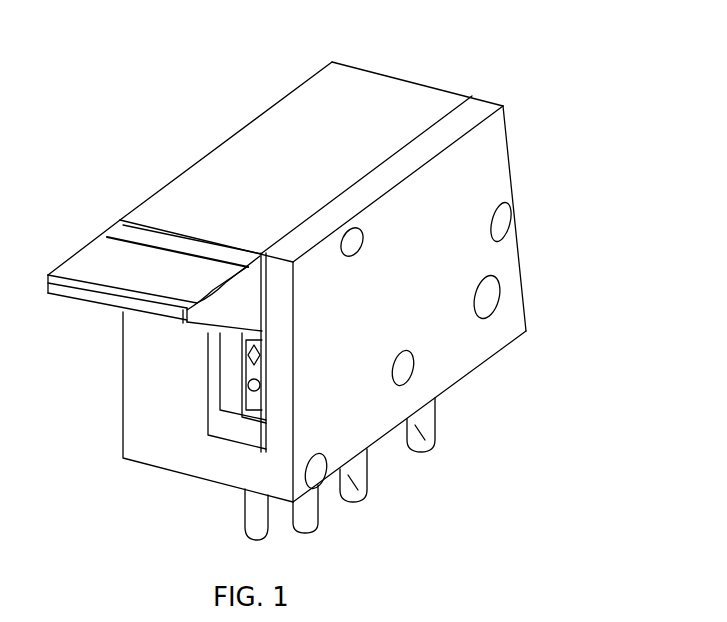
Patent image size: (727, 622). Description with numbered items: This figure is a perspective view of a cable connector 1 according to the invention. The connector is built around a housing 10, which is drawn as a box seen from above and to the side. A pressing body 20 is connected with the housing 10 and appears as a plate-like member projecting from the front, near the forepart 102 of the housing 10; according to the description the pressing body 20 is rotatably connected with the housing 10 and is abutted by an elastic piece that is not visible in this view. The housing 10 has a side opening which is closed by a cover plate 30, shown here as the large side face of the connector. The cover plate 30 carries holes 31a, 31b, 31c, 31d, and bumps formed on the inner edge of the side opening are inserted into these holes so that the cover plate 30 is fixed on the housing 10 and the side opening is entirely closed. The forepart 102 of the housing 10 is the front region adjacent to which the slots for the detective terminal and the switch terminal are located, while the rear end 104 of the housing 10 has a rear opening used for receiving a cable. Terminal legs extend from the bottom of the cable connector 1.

The cable connector 1 is at (119, 104).
The housing 10 is at (230, 153).
The pressing body 20 is at (97, 265).
The cover plate 30 is at (503, 327).
The hole 31a is at (316, 472).
The hole 31b is at (408, 368).
The hole 31c is at (507, 220).
The hole 31d is at (352, 232).
The forepart 102 is at (150, 447).
The rear end 104 is at (505, 123).